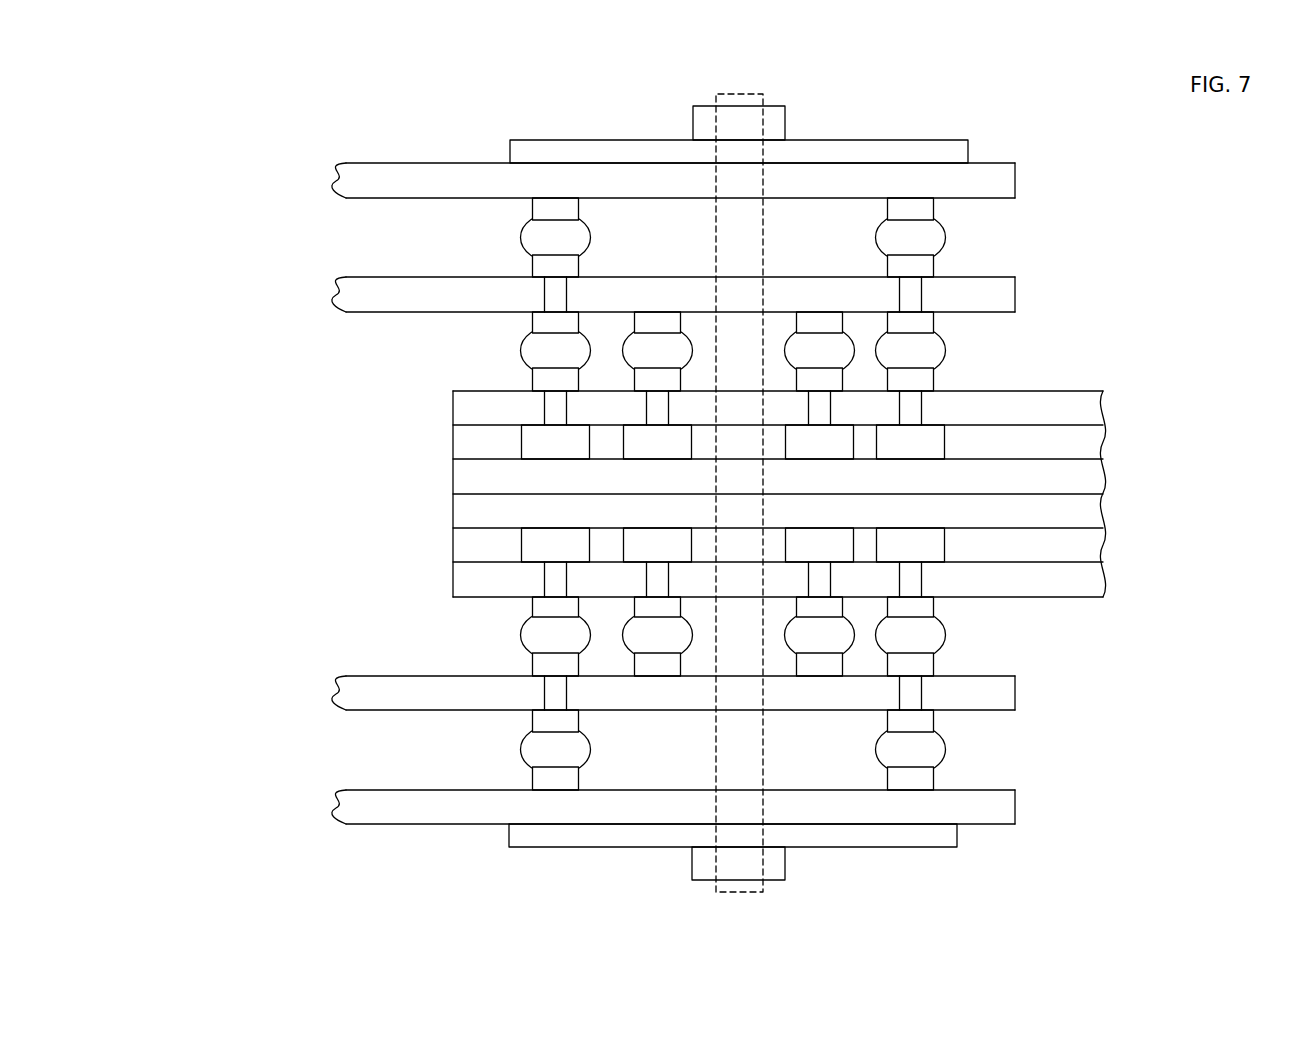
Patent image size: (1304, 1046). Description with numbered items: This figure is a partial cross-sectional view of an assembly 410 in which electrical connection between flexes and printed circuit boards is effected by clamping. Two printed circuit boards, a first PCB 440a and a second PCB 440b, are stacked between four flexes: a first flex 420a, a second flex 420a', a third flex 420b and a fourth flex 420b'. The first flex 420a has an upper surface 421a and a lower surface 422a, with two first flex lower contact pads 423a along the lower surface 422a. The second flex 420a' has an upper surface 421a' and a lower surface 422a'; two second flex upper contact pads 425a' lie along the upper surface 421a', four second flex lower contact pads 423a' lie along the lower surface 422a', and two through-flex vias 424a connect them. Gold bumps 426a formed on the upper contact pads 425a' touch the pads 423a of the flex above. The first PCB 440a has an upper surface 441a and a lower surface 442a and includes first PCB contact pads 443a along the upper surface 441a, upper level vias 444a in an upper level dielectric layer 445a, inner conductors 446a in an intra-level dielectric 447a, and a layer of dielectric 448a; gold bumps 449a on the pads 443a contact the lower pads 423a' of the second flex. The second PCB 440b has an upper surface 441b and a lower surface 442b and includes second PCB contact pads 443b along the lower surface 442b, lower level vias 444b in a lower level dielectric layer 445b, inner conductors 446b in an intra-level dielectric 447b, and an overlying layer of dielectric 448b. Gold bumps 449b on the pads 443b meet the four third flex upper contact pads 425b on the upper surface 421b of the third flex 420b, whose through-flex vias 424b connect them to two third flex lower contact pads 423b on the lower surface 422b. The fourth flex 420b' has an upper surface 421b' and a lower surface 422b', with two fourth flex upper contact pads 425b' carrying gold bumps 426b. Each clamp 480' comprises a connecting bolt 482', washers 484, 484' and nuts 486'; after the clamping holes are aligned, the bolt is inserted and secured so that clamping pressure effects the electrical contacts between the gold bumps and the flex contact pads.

The electronic assembly 410 is at (228, 63).
The first flex 420a is at (591, 179).
The upper surface of first flex 421a is at (614, 134).
The lower surface of first flex 422a is at (625, 225).
The first flex lower contact pads 423a is at (819, 202).
The gold bump 426a is at (529, 249).
The second flex upper contact pads 425a' is at (810, 259).
The second flex 420a' is at (666, 288).
The upper surface of second flex 421a' is at (680, 247).
The lower surface of second flex 422a' is at (672, 335).
The through-flex vias 424a is at (910, 288).
The second flex lower contact pads 423a' is at (678, 340).
The gold bump 449a is at (529, 362).
The first PCB contact pads 443a is at (922, 378).
The upper level vias 444a is at (922, 402).
The upper level dielectric layer 445a is at (579, 418).
The inner conductors 446a is at (529, 452).
The intra-level dielectric 447a is at (1093, 452).
The layer of dielectric 448a is at (1025, 486).
The upper surface of first PCB 441a is at (1083, 390).
The lower surface of first PCB 442a is at (1085, 497).
The first PCB 440a is at (445, 391).
The second PCB 440b is at (445, 494).
The upper surface of second PCB 441b is at (488, 492).
The lower surface of second PCB 442b is at (483, 598).
The overlying layer of dielectric 448b is at (1083, 521).
The intra-level dielectric 447b is at (1060, 556).
The inner conductors 446b is at (529, 556).
The lower level dielectric layer 445b is at (579, 588).
The lower level vias 444b is at (912, 573).
The second PCB contact pads 443b is at (922, 607).
The gold bump 449b is at (529, 646).
The third flex upper contact pads 425b is at (808, 658).
The third flex 420b is at (648, 689).
The upper surface of third flex 421b is at (631, 645).
The lower surface of third flex 422b is at (643, 737).
The through-flex vias 424b is at (922, 688).
The third flex lower contact pads 423b is at (922, 720).
The gold bump 426b is at (884, 761).
The fourth flex upper contact pads 425b' is at (828, 784).
The fourth flex 420b' is at (631, 813).
The upper surface of fourth flex 421b' is at (680, 760).
The lower surface of fourth flex 422b' is at (680, 845).
The clamp 480' is at (732, 449).
The connecting bolt 482' is at (684, 469).
The nuts 486' is at (742, 469).
The washer 484 is at (790, 112).
The washers 484' is at (775, 858).